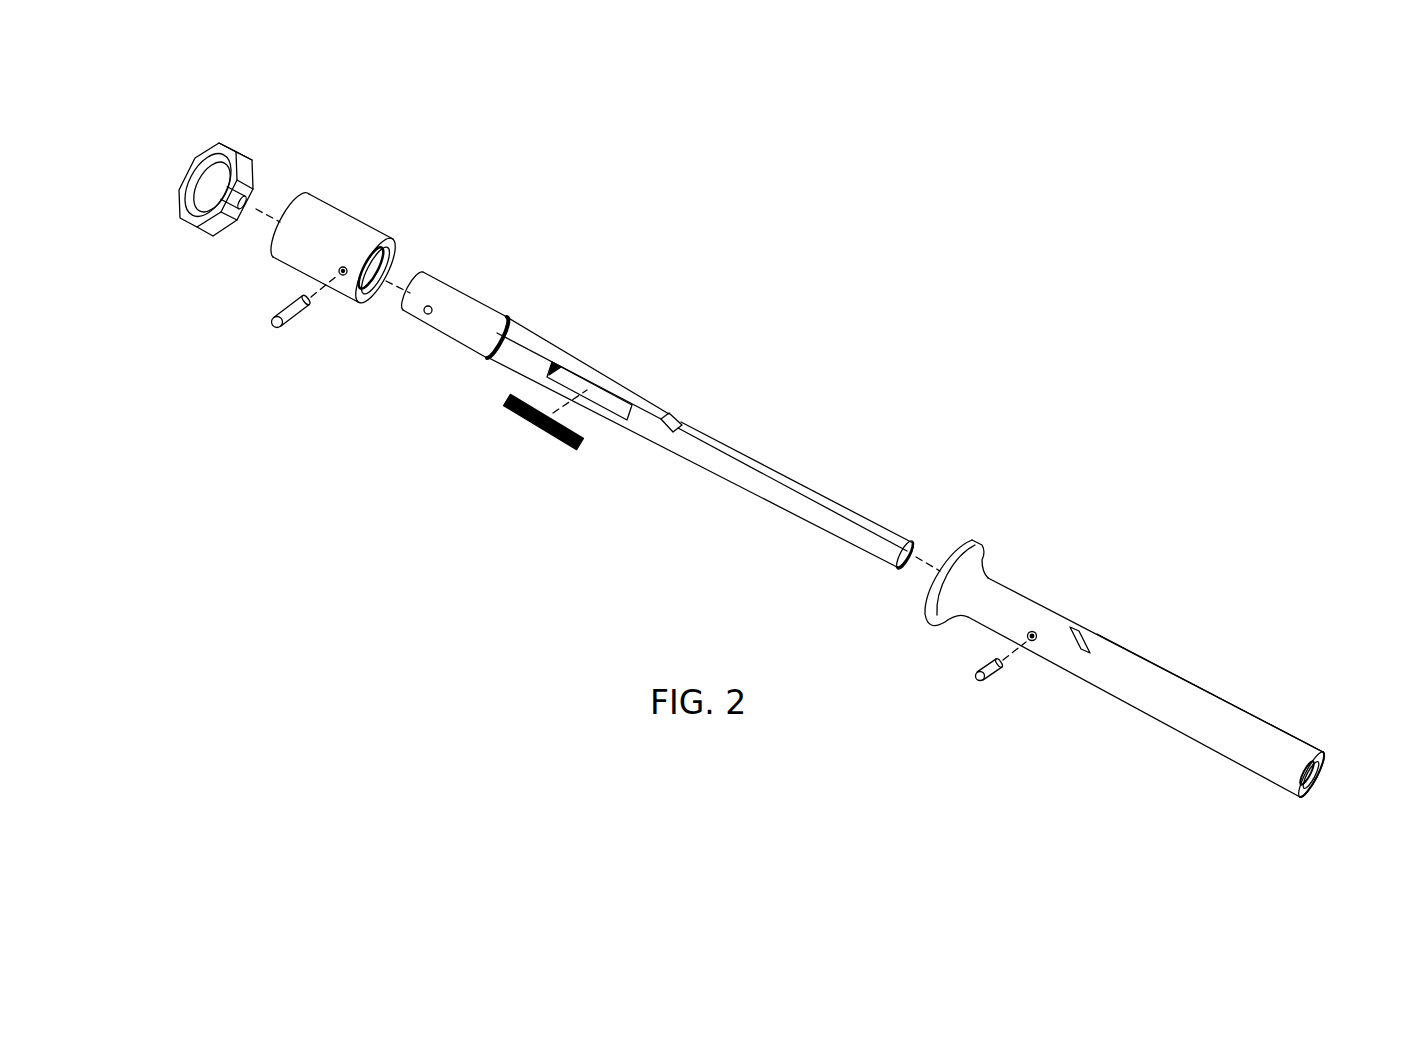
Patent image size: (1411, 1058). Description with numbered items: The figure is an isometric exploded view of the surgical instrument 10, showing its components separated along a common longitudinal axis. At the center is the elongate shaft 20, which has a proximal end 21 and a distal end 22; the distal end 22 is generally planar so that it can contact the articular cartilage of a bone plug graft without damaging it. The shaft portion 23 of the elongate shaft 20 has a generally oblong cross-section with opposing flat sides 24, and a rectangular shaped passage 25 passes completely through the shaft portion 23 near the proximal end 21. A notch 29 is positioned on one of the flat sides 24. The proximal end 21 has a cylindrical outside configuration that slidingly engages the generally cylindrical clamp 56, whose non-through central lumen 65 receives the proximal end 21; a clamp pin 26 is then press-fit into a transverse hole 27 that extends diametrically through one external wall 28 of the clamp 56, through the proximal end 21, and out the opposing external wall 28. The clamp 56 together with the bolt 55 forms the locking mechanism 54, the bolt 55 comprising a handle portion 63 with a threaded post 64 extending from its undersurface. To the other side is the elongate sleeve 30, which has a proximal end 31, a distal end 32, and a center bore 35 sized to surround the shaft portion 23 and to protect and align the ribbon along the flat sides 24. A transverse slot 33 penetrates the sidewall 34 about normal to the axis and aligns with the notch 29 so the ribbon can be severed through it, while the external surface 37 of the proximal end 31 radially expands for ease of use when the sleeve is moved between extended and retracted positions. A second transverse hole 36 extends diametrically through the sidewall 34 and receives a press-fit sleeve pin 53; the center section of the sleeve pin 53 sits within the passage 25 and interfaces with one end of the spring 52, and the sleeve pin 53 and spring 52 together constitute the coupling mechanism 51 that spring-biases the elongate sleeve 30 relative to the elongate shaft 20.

The surgical instrument 10 is at (790, 275).
The elongate shaft 20 is at (790, 460).
The proximal end 21 is at (423, 272).
The distal end 22 is at (900, 570).
The shaft portion 23 is at (747, 505).
The flat sides 24 is at (523, 342).
The rectangular shaped passage 25 is at (620, 412).
The clamp pin 26 is at (273, 326).
The transverse hole 27 is at (343, 276).
The external wall 28 is at (352, 224).
The notch 29 is at (673, 413).
The elongate sleeve 30 is at (1167, 648).
The proximal end 31 is at (977, 542).
The distal end 32 is at (1325, 756).
The transverse slot 33 is at (1075, 652).
The sidewall 34 is at (1090, 630).
The center bore 35 is at (1318, 782).
The second transverse hole 36 is at (1035, 642).
The external surface 37 is at (1232, 718).
The coupling mechanism 51 is at (517, 444).
The spring 52 is at (504, 402).
The sleeve pin 53 is at (975, 676).
The locking mechanism 54 is at (334, 162).
The bolt 55 is at (188, 158).
The clamp 56 is at (280, 282).
The handle portion 63 is at (198, 220).
The threaded post 64 is at (240, 208).
The central lumen 65 is at (383, 282).